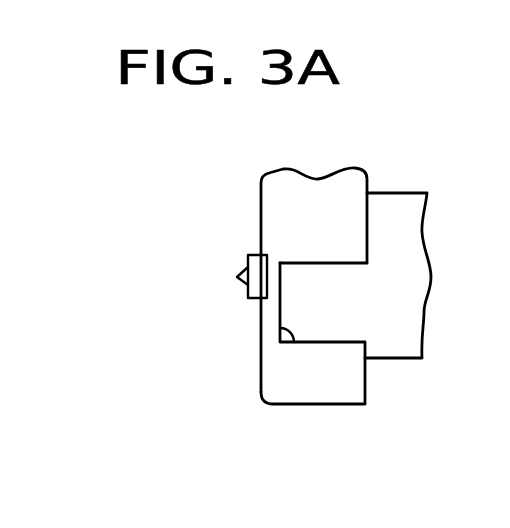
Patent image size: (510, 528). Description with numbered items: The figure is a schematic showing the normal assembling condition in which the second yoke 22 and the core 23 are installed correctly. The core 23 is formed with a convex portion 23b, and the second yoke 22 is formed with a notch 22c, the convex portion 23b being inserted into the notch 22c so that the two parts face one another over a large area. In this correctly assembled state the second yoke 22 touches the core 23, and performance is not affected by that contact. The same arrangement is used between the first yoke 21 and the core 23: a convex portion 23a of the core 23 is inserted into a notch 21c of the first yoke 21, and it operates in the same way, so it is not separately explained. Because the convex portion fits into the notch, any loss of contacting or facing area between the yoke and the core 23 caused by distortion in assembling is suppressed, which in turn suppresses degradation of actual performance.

The second yoke 22 is at (267, 202).
The first yoke 21 is at (275, 286).
The notch 22c is at (278, 332).
The notch 21c is at (233, 351).
The core 23 is at (395, 203).
The convex portion 23b is at (315, 265).
The convex portion 23a is at (323, 240).